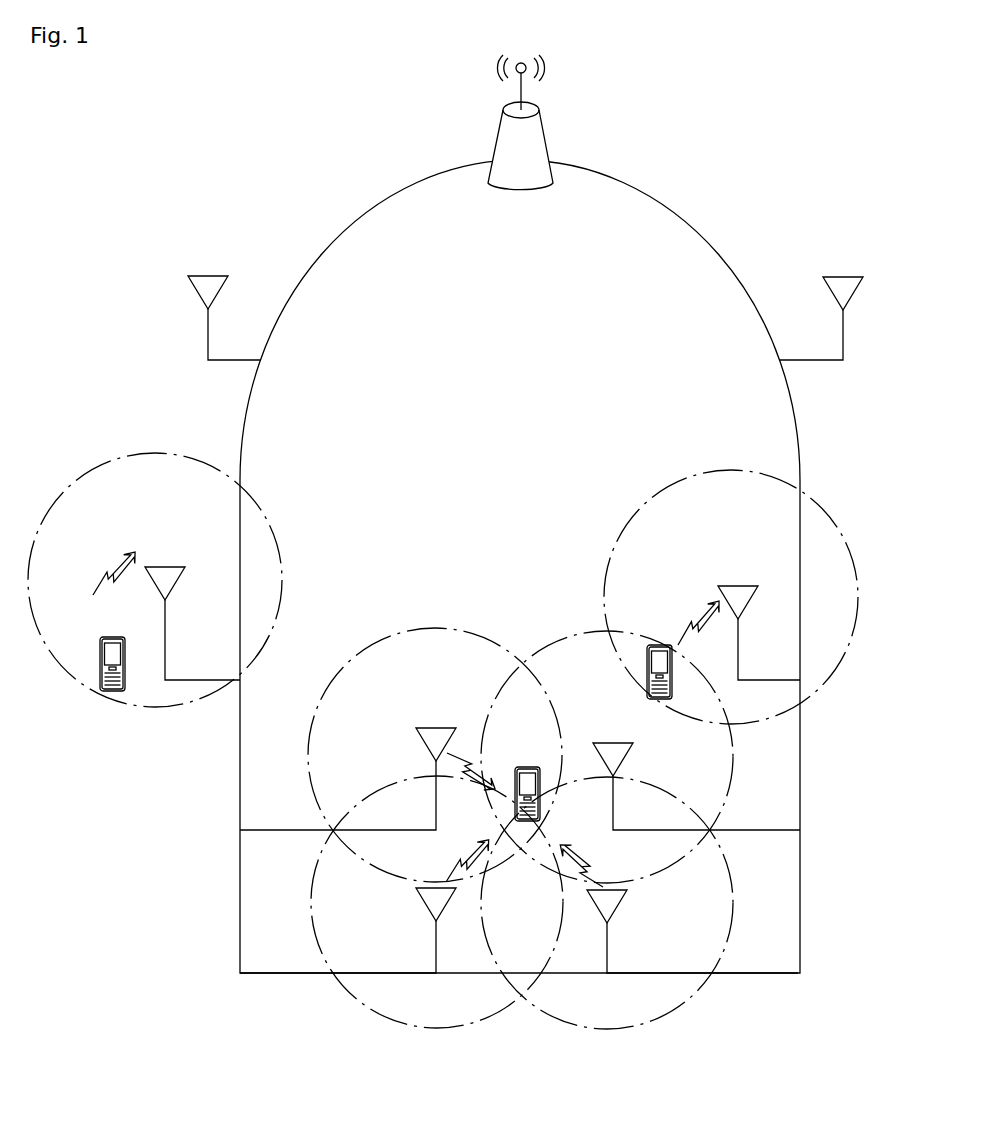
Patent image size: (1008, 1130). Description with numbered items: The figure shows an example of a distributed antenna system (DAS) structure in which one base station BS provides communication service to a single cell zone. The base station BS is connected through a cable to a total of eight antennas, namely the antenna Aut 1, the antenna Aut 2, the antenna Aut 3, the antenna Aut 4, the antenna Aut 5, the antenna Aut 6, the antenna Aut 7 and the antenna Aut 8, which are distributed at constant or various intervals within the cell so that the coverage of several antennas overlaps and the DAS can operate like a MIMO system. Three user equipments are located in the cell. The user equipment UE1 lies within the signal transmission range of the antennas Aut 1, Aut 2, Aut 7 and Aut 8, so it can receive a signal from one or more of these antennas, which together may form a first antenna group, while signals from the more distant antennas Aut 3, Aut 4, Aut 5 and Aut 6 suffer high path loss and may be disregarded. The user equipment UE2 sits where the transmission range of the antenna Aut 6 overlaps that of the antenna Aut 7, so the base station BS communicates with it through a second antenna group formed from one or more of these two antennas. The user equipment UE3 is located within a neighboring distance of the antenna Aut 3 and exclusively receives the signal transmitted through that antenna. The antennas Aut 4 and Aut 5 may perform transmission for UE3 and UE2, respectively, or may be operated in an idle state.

The base station BS is at (520, 122).
The antenna 1 Aut 1 is at (401, 902).
The antenna 2 Aut 2 is at (401, 755).
The antenna 3 Aut 3 is at (155, 580).
The antenna 4 Aut 4 is at (199, 318).
The antenna 5 Aut 5 is at (850, 318).
The antenna 6 Aut 6 is at (731, 597).
The antenna 7 Aut 7 is at (640, 757).
The antenna 8 Aut 8 is at (639, 903).
The user equipment 1 UE1 is at (524, 820).
The user equipment 2 UE2 is at (689, 659).
The user equipment 3 UE3 is at (113, 638).